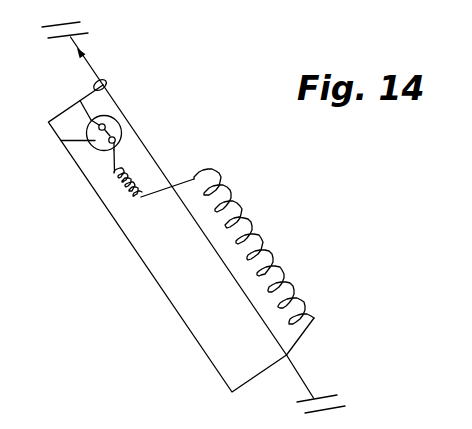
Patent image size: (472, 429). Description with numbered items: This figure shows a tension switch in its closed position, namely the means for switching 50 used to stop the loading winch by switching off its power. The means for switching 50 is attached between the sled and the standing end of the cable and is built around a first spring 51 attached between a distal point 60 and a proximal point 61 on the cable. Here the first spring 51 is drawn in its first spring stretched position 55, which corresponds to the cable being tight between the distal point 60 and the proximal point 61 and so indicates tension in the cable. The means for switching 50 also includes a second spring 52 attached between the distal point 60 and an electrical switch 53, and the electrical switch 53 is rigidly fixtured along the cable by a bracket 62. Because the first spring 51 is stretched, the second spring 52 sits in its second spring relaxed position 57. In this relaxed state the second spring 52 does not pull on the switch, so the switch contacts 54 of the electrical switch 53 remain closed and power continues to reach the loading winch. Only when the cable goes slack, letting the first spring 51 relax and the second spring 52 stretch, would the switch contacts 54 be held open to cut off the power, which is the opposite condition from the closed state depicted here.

The means for switching 50 is at (212, 88).
The first spring 51 is at (242, 204).
The second spring 52 is at (128, 172).
The electrical switch 53 is at (125, 117).
The switch contacts 54 is at (62, 141).
The first spring stretched position 55 is at (258, 241).
The second spring relaxed position 57 is at (127, 193).
The distal point 60 is at (171, 181).
The proximal point 61 is at (288, 356).
The bracket 62 is at (193, 343).